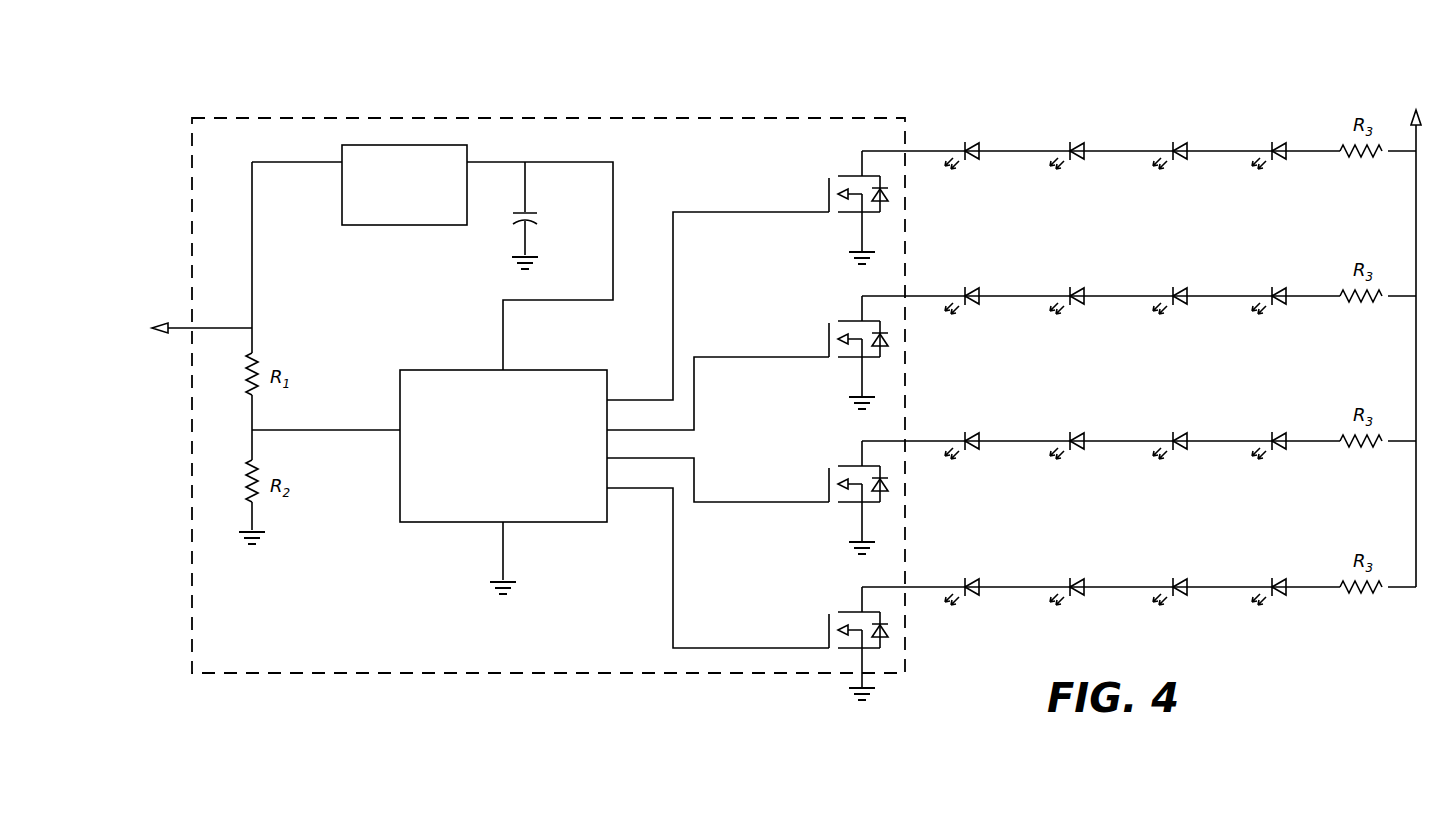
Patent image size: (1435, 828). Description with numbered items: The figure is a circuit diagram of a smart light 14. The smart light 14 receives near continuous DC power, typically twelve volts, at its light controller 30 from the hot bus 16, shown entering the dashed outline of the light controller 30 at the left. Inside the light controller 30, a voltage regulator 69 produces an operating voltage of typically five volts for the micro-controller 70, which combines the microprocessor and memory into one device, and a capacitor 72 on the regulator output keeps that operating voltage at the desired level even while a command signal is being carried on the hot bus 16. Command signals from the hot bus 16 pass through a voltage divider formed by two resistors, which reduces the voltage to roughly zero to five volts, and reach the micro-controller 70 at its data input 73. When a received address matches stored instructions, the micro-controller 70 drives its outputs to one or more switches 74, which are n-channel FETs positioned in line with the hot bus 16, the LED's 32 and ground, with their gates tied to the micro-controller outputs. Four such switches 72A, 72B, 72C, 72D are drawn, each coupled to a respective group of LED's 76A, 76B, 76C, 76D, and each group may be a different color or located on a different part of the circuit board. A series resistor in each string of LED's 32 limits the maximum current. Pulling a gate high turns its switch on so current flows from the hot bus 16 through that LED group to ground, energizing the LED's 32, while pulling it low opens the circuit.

The smart light 14 is at (1139, 321).
The hot bus 16 is at (192, 328).
The light controller 30 is at (537, 673).
The LED's 32 is at (1275, 103).
The voltage regulator 69 is at (391, 145).
The micro-controller 70 is at (455, 522).
The capacitor 72 is at (529, 212).
The switch 72A is at (833, 172).
The switch 72B is at (830, 318).
The switch 72C is at (830, 463).
The switch 72D is at (832, 612).
The data input 73 is at (400, 425).
The switches 74 is at (793, 379).
The group of LED's 76A is at (1105, 151).
The group of LED's 76B is at (1105, 296).
The group of LED's 76C is at (1105, 441).
The group of LED's 76D is at (1105, 587).